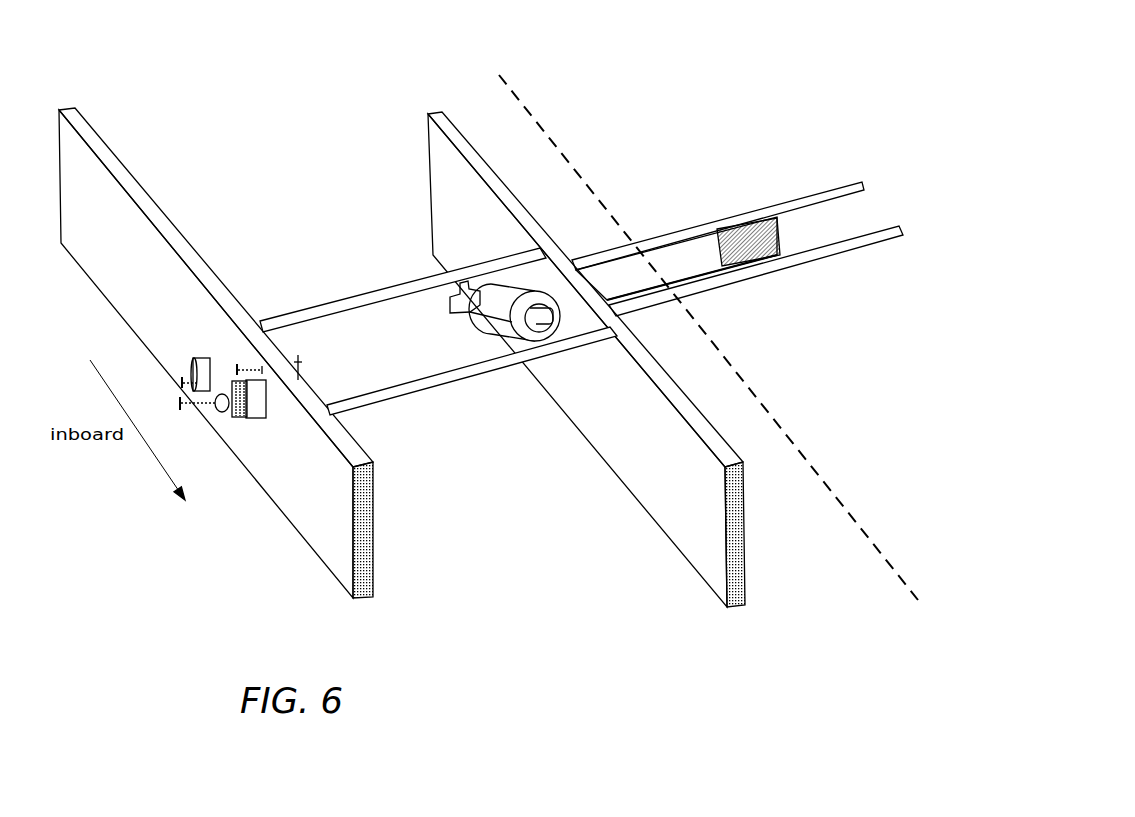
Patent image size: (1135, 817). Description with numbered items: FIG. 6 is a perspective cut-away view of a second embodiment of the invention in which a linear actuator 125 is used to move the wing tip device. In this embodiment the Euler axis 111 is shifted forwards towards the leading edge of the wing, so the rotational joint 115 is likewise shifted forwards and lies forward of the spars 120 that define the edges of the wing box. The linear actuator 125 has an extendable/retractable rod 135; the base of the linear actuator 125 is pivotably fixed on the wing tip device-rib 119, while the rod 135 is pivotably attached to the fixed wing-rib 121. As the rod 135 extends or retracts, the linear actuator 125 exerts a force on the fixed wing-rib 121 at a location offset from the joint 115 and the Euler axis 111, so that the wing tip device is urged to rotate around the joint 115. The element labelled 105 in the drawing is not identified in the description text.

The channel rail 105 is at (839, 165).
The Euler axis 111 is at (691, 321).
The rotational joint 115 is at (707, 272).
The wing tip device-rib 119 is at (288, 302).
The spars 120 is at (413, 124).
The fixed wing-rib 121 is at (389, 413).
The linear actuator 125 is at (496, 350).
The extendable/retractable rod 135 is at (459, 331).